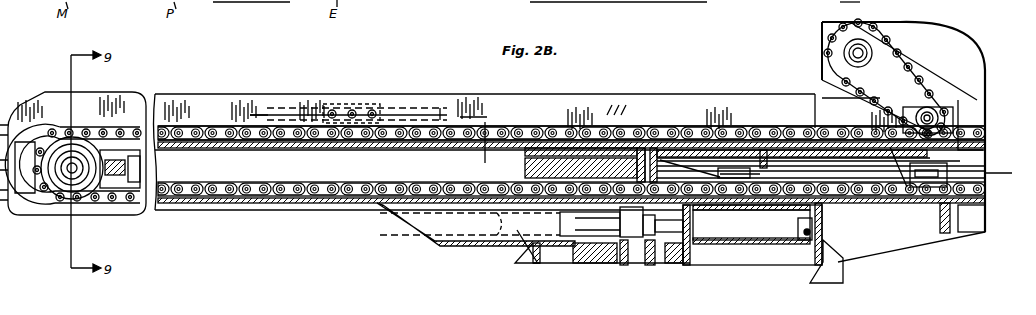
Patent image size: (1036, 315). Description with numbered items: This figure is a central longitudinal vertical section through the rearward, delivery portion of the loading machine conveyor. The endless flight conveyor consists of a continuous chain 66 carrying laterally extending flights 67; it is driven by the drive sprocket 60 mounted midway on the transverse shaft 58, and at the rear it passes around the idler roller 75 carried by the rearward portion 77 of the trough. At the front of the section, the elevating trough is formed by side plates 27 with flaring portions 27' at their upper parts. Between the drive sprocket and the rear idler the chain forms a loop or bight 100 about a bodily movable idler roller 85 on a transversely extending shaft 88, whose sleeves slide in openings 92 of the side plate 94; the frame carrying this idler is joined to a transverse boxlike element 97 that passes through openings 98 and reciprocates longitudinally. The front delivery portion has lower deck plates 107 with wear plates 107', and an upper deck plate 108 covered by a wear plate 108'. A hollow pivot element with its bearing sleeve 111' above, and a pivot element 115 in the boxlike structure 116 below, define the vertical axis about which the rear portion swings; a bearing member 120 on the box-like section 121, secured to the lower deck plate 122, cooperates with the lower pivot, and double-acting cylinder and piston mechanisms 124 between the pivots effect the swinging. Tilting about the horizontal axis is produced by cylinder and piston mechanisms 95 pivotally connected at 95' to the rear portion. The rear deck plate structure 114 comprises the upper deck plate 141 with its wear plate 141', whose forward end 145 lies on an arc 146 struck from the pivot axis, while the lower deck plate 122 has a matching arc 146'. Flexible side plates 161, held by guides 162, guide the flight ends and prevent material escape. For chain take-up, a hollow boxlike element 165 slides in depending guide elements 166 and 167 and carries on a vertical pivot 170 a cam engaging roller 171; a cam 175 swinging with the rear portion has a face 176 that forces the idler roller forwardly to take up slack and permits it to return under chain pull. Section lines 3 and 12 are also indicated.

The section line 3 is at (260, 104).
The frame 12 is at (886, 6).
The side plates 27 is at (958, 122).
The oppositely outwardly inclined portions 27' is at (917, 51).
The transverse shaft 58 is at (845, 55).
The drive sprocket 60 is at (840, 82).
The continuous chain 66 is at (830, 28).
The flights 67 is at (700, 120).
The idler roller 75 is at (58, 142).
The rearward portion 77 is at (318, 98).
The idler roller 85 is at (888, 112).
The transversely extending shaft 88 is at (888, 121).
The openings 92 is at (983, 82).
The side plate element 94 is at (817, 100).
The extensible cylinder and piston mechanisms 95 is at (897, 257).
The pivotal connection 95' is at (790, 252).
The transverse boxlike element 97 is at (940, 188).
The openings 98 is at (980, 102).
The loop or bight 100 is at (886, 78).
The lower deck plates 107 is at (943, 242).
The wear plates 107' is at (973, 229).
The upper deck plate 108 is at (581, 124).
The wear plate 108' is at (793, 106).
The bearing sleeve 111' is at (620, 127).
The deck plate structure 114 is at (285, 140).
The pivot element 115 is at (653, 264).
The boxlike structure 116 is at (700, 250).
The bearing member 120 is at (597, 264).
The box-like section 121 is at (438, 246).
The lower deck plate 122 is at (305, 207).
The cylinder and piston mechanisms 124 is at (530, 252).
The upper deck plate 141 is at (199, 106).
The wear plate 141' is at (333, 106).
The forward end 145 is at (512, 146).
The arc 146 is at (581, 105).
The arc 146' is at (596, 222).
The flexible side plates 161 is at (477, 98).
The guides 162 is at (352, 108).
The hollow boxlike element 165 is at (868, 188).
The guide element 166 is at (763, 178).
The guide element 167 is at (900, 188).
The vertical pivot 170 is at (765, 133).
The cam engaging roller 171 is at (733, 172).
The cam 175 is at (662, 160).
The face 176 is at (720, 170).